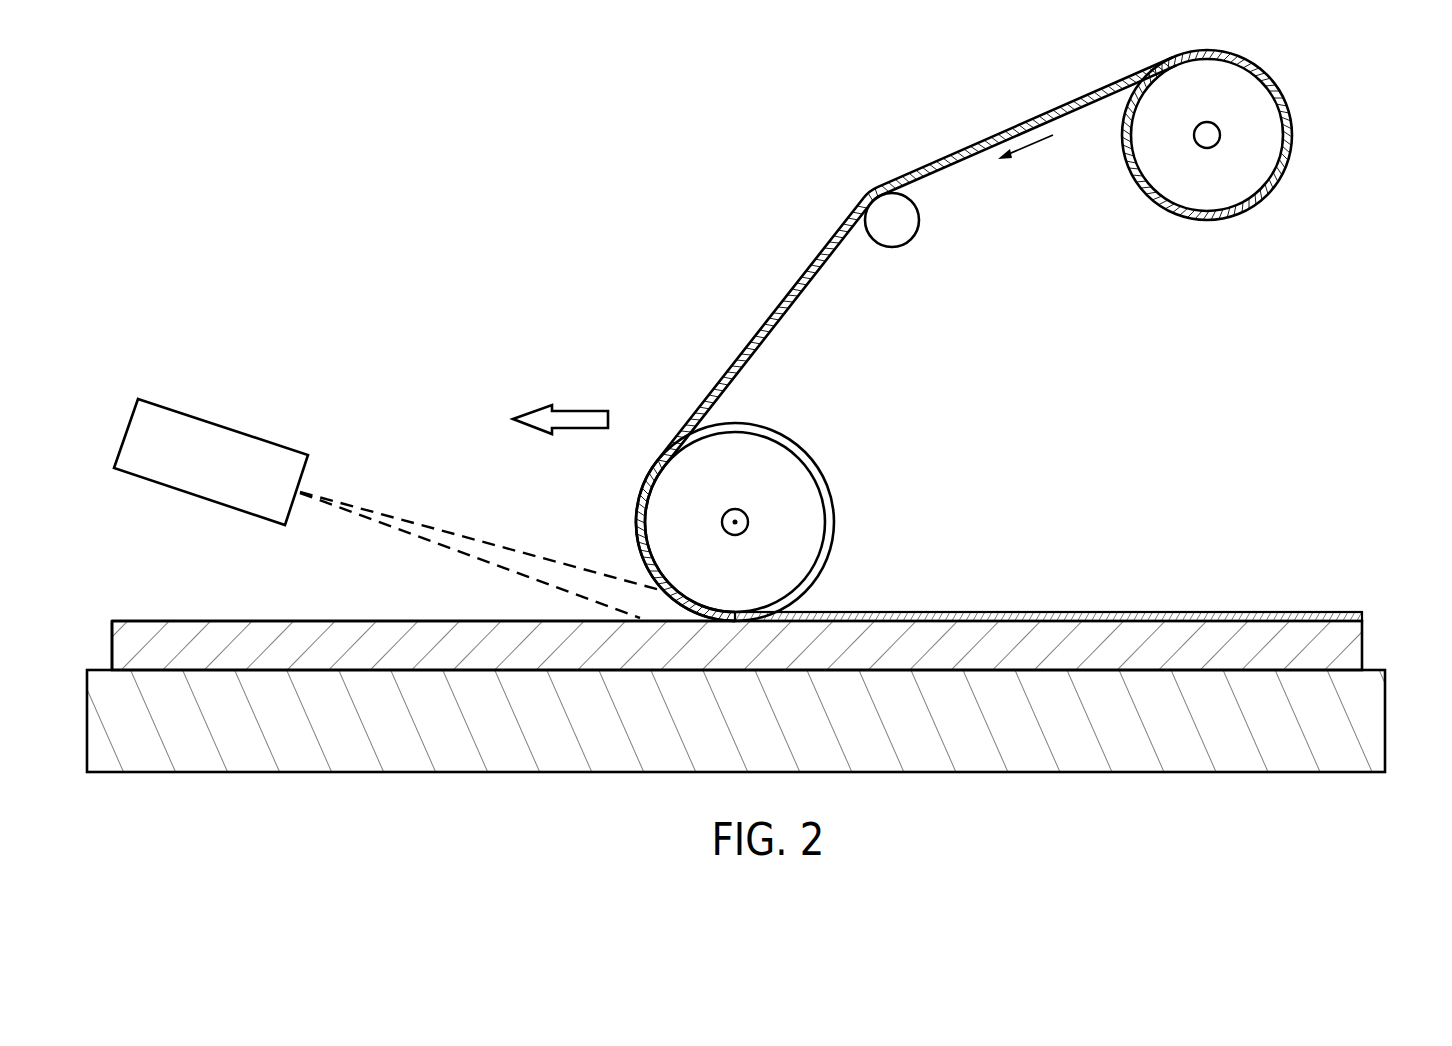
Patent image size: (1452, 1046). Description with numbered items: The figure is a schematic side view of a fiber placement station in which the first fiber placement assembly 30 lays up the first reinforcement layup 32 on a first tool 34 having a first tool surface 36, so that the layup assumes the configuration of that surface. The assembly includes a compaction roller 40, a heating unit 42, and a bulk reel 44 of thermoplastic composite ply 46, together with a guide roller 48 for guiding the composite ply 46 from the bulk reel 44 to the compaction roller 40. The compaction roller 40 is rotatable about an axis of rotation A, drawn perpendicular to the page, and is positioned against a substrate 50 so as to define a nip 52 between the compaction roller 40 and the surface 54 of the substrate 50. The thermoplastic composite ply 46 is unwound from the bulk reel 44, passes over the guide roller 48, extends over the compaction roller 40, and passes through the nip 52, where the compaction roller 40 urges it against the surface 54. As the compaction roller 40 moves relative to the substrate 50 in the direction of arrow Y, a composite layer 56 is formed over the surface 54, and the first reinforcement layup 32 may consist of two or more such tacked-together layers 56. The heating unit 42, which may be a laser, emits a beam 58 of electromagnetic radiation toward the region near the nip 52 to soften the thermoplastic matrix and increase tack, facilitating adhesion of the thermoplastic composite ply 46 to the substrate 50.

The first fiber placement assembly 30 is at (448, 115).
The first reinforcement layup 32 is at (1390, 610).
The first tool 34 is at (1386, 752).
The first tool surface 36 is at (103, 668).
The compaction roller 40 is at (835, 521).
The heating unit 42 is at (216, 424).
The bulk reel 44 is at (1293, 135).
The thermoplastic composite ply 46 is at (1008, 127).
The guide roller 48 is at (920, 222).
The substrate 50 is at (228, 632).
The nip 52 is at (647, 596).
The surface of the substrate 54 is at (293, 620).
The composite layer 56 is at (1268, 613).
The beam of electromagnetic radiation 58 is at (436, 542).
The axis of rotation A is at (737, 519).
The direction arrow Y is at (578, 411).